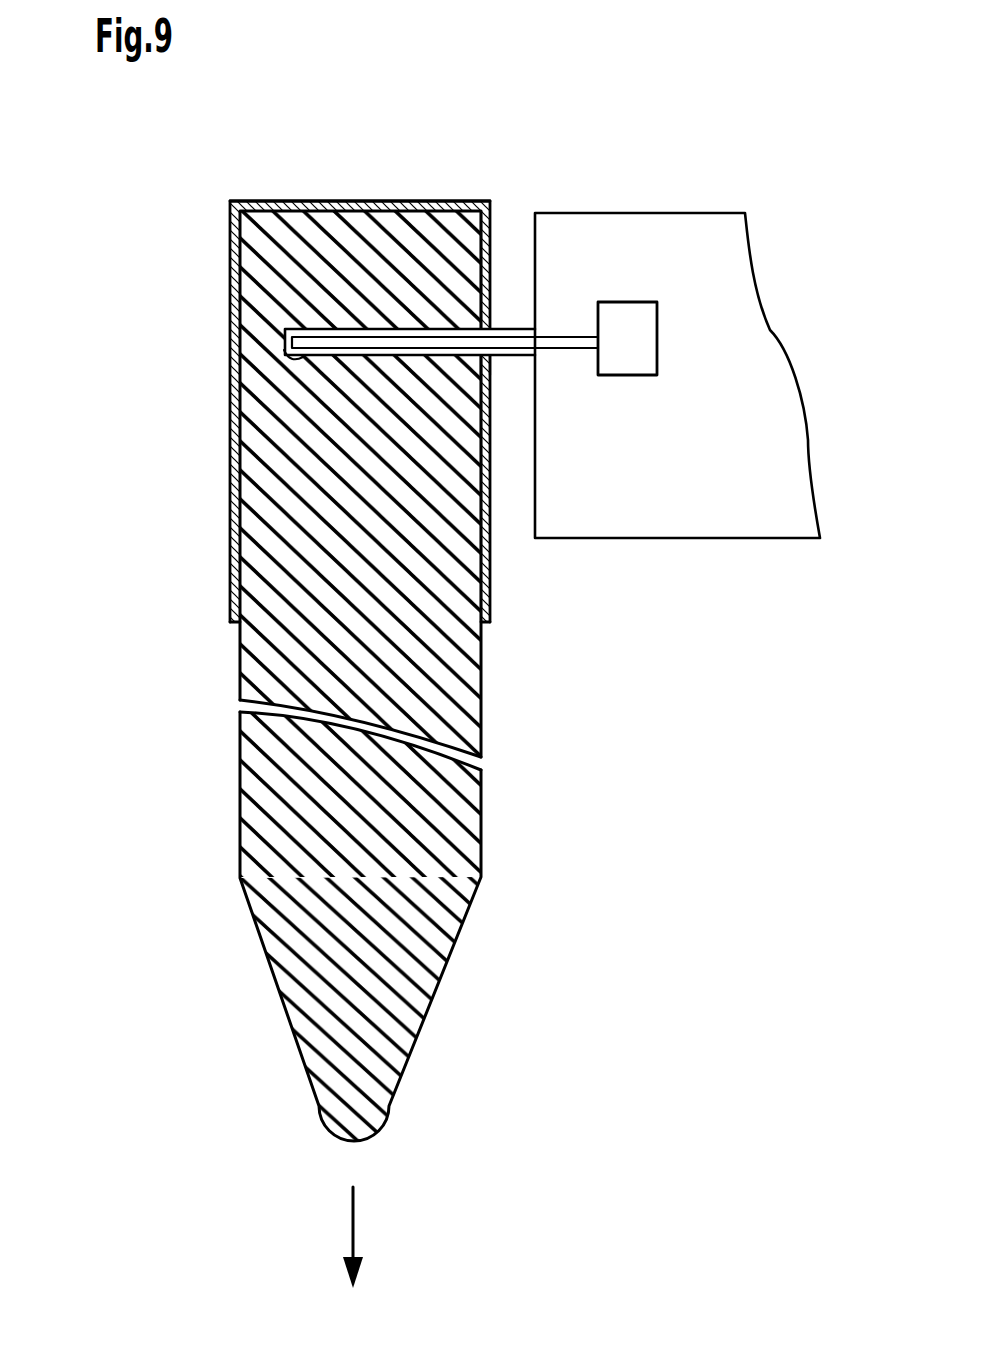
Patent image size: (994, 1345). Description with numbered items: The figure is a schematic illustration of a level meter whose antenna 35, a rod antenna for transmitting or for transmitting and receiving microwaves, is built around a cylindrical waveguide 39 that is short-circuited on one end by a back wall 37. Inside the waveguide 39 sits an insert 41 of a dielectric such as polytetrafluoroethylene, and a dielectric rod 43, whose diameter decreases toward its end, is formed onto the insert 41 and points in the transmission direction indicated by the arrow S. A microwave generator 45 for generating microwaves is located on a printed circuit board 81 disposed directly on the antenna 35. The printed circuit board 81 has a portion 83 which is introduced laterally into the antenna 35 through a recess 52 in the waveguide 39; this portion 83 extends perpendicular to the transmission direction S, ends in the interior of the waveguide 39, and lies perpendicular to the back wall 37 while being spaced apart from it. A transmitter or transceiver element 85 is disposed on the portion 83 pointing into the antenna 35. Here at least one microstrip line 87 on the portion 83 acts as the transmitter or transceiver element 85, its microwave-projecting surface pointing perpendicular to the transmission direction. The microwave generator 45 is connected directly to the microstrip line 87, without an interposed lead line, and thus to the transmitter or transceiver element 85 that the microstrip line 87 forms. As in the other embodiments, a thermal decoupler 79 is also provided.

The antenna 35 is at (323, 626).
The back wall 37 is at (312, 200).
The cylindrical waveguide 39 is at (238, 398).
The insert 41 is at (288, 497).
The dielectric rod 43 is at (270, 902).
The microwave generator 45 is at (645, 310).
The opening in sleeve 52 is at (488, 375).
The thermal decoupler 79 is at (232, 587).
The printed circuit board 81 is at (598, 232).
The portion 83 is at (283, 336).
The transmitter or transceiver element 85 is at (418, 329).
The microstrip line 87 is at (290, 359).
The transmission direction S is at (357, 1214).